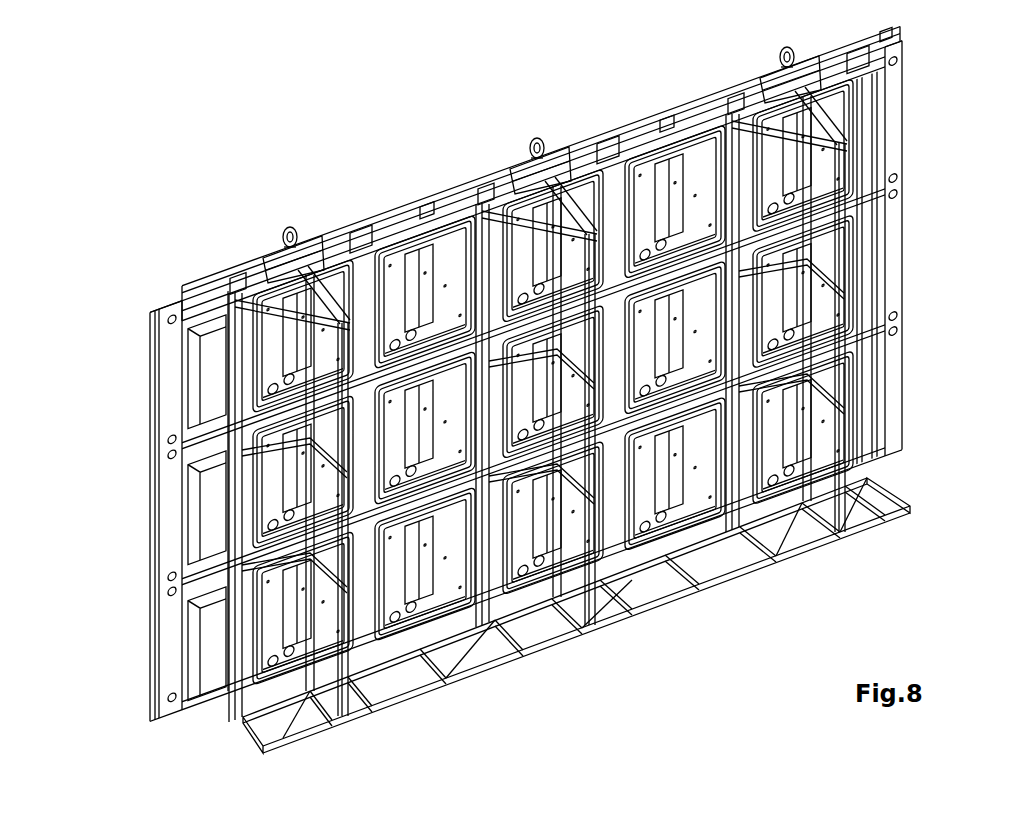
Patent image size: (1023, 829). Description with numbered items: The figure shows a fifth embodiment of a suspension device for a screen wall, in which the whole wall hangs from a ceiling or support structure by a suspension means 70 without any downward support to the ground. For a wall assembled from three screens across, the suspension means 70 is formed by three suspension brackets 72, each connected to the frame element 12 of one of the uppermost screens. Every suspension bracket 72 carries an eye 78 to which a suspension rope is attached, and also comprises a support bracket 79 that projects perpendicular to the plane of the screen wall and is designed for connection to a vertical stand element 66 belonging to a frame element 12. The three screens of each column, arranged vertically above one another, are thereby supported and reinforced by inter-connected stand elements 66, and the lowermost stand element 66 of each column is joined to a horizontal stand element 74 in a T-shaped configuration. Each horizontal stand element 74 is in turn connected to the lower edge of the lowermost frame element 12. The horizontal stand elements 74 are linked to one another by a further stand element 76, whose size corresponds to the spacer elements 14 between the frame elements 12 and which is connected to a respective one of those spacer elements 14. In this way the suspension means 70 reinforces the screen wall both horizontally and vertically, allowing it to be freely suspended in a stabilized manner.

The frame element 12 is at (230, 398).
The spacer element 14 is at (410, 205).
The vertical stand element 66 is at (872, 222).
The suspension means 70 is at (912, 538).
The suspension bracket 72 is at (310, 238).
The horizontal stand element 74 is at (840, 555).
The further stand element 76 is at (740, 580).
The eye 78 is at (288, 236).
The support bracket 79 is at (355, 232).